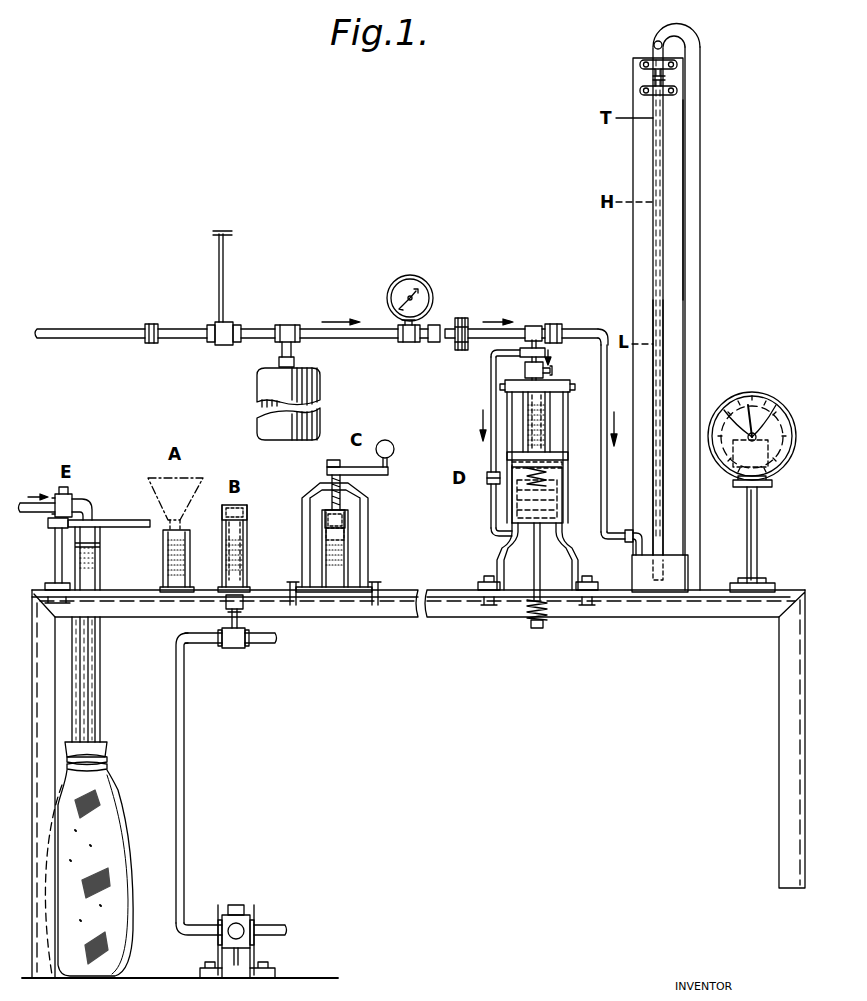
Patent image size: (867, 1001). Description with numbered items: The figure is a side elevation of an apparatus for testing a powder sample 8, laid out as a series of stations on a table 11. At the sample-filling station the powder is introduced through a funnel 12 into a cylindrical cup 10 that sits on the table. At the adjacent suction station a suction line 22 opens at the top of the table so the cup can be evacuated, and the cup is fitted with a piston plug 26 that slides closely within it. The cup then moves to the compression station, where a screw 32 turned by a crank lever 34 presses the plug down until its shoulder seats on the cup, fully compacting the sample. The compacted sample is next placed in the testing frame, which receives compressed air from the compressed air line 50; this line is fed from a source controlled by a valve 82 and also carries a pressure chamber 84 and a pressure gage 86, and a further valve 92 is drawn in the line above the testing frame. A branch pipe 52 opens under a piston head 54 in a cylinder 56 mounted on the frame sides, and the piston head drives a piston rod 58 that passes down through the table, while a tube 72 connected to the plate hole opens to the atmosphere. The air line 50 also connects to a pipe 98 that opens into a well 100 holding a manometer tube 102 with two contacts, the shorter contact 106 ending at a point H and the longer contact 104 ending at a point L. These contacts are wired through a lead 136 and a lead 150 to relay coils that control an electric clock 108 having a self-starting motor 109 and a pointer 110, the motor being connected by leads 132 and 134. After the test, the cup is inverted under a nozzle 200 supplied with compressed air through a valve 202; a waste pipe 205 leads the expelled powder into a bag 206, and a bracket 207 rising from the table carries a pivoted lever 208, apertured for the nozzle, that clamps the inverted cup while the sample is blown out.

The powder sample 8 is at (163, 550).
The cylindrical cup 10 is at (101, 566).
The table 11 is at (405, 590).
The funnel 12 is at (198, 478).
The suction line 22 is at (184, 665).
The piston plug 26 is at (247, 516).
The screw 32 is at (327, 472).
The crank lever 34 is at (381, 476).
The compressed air line 50 is at (378, 339).
The branch pipe 52 is at (491, 410).
The piston head 54 is at (562, 490).
The cylinder 56 is at (557, 480).
The piston rod 58 is at (536, 578).
The tube 72 is at (573, 462).
The valve 82 is at (225, 322).
The pressure chamber 84 is at (268, 388).
The pressure gage 86 is at (408, 282).
The valve 92 is at (527, 372).
The pipe 98 is at (606, 413).
The well 100 is at (675, 575).
The manometer tube 102 is at (653, 252).
The contact 104 is at (653, 287).
The contact 106 is at (653, 162).
The electric clock 108 is at (752, 392).
The self-starting motor 109 is at (776, 403).
The pointer 110 is at (728, 412).
The lead 132 is at (733, 512).
The lead 134 is at (775, 506).
The lead 136 is at (696, 150).
The lead 150 is at (694, 192).
The nozzle 200 is at (86, 510).
The valve 202 is at (70, 498).
The waste pipe 205 is at (100, 675).
The bag 206 is at (110, 848).
The bracket 207 is at (55, 548).
The lever 208 is at (128, 522).